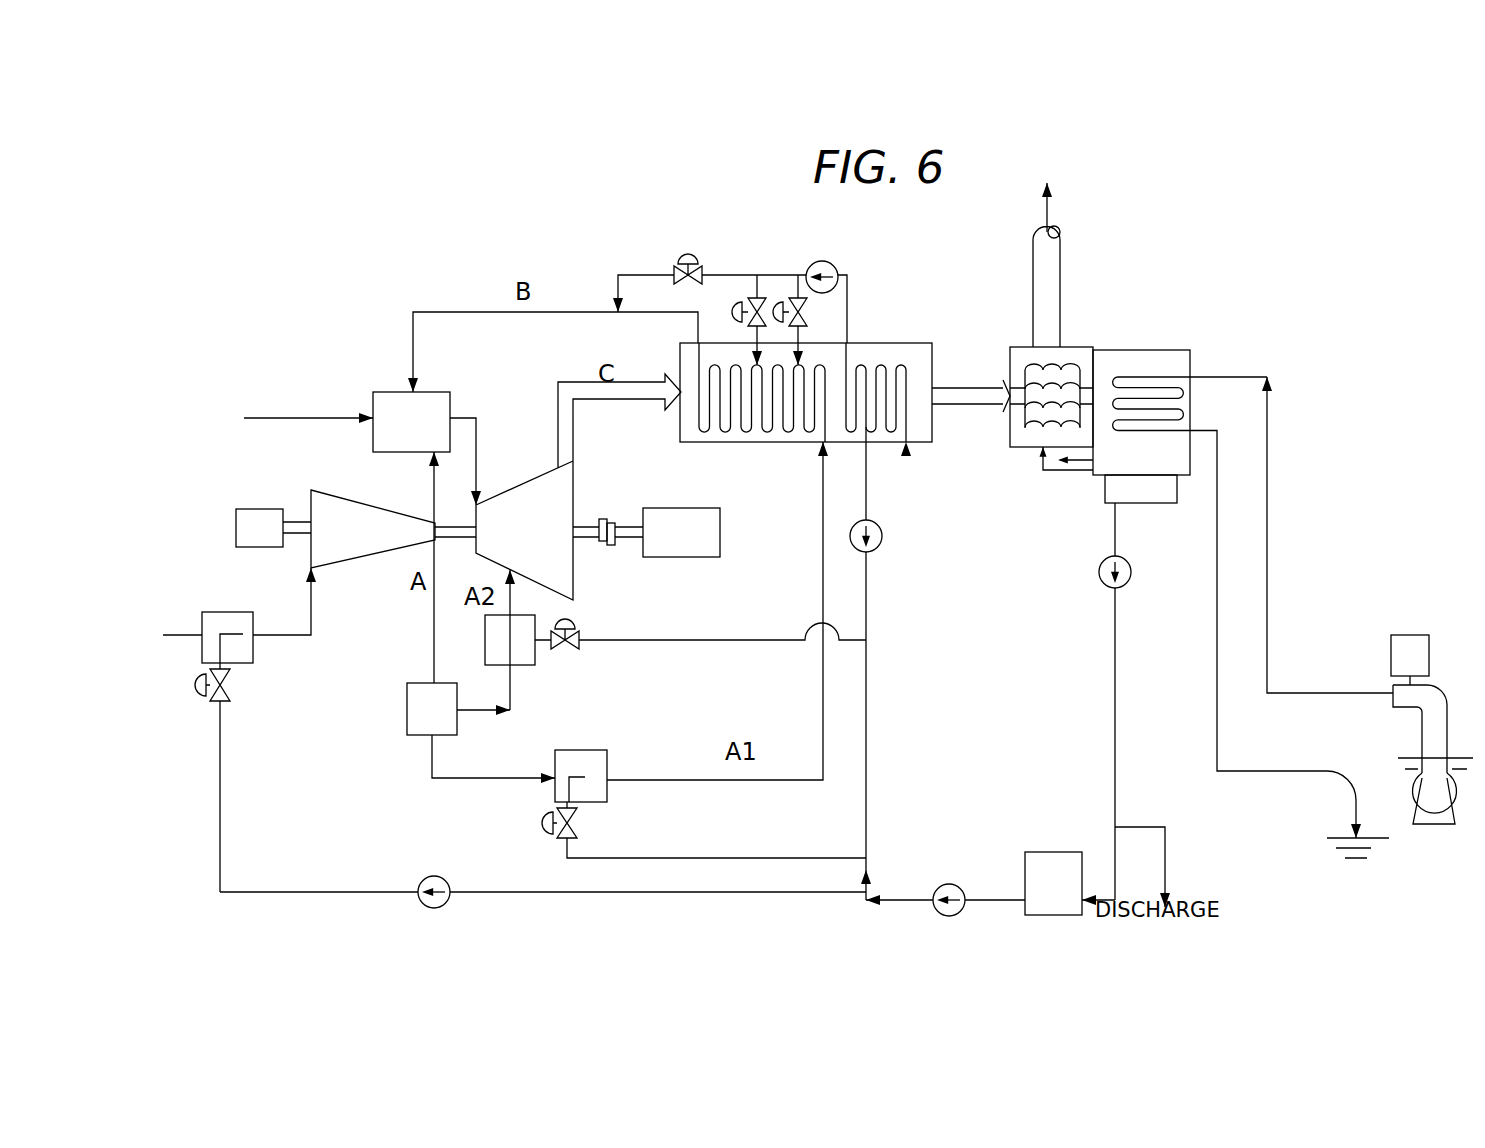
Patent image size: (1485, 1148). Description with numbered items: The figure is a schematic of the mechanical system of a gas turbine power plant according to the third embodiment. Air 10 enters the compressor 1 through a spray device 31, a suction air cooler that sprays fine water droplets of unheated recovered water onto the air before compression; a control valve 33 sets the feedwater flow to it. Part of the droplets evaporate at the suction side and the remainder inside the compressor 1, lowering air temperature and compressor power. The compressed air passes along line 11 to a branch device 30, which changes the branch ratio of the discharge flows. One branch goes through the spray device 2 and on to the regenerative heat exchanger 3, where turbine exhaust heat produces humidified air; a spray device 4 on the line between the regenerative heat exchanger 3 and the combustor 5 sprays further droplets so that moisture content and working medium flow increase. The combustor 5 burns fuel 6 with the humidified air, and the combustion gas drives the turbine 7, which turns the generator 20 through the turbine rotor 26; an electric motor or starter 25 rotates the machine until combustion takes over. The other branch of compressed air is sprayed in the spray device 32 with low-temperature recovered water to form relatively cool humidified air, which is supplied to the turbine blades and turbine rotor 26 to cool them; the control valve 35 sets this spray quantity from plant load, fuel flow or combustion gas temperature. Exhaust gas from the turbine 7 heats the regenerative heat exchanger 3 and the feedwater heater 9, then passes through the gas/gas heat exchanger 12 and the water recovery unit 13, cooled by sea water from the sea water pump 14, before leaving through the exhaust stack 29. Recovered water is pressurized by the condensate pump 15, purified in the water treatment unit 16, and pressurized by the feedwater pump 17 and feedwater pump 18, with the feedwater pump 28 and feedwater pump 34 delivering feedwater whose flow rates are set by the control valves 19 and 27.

The compressor 1 is at (340, 497).
The spray device 2 is at (578, 750).
The regenerative heat exchanger 3 is at (733, 442).
The spray device 4 is at (614, 300).
The combustor 5 is at (394, 392).
The fuel 6 is at (304, 416).
The turbine 7 is at (530, 481).
The feedwater heater 9 is at (884, 366).
The air 10 is at (194, 634).
The compressed air line 11 is at (430, 489).
The gas/gas heat exchanger 12 is at (1034, 430).
The water recovery unit 13 is at (1142, 378).
The sea water pump 14 is at (1418, 714).
The condensate pump 15 is at (1100, 570).
The water treatment unit 16 is at (1046, 852).
The feedwater pump 17 is at (952, 884).
The feedwater pump 18 is at (856, 552).
The control valve 19 is at (544, 834).
The generator 20 is at (654, 508).
The electric motor or starter 25 is at (246, 509).
The turbine rotor 26 is at (590, 541).
The control valve 27 is at (692, 262).
The feedwater pump 28 is at (834, 264).
The exhaust stack 29 is at (1033, 278).
The branch device 30 is at (410, 735).
The spray device (suction air cooler) 31 is at (222, 612).
The spray device 32 is at (485, 634).
The control valve 33 is at (196, 686).
The feedwater pump 34 is at (434, 876).
The control valve 35 is at (578, 650).